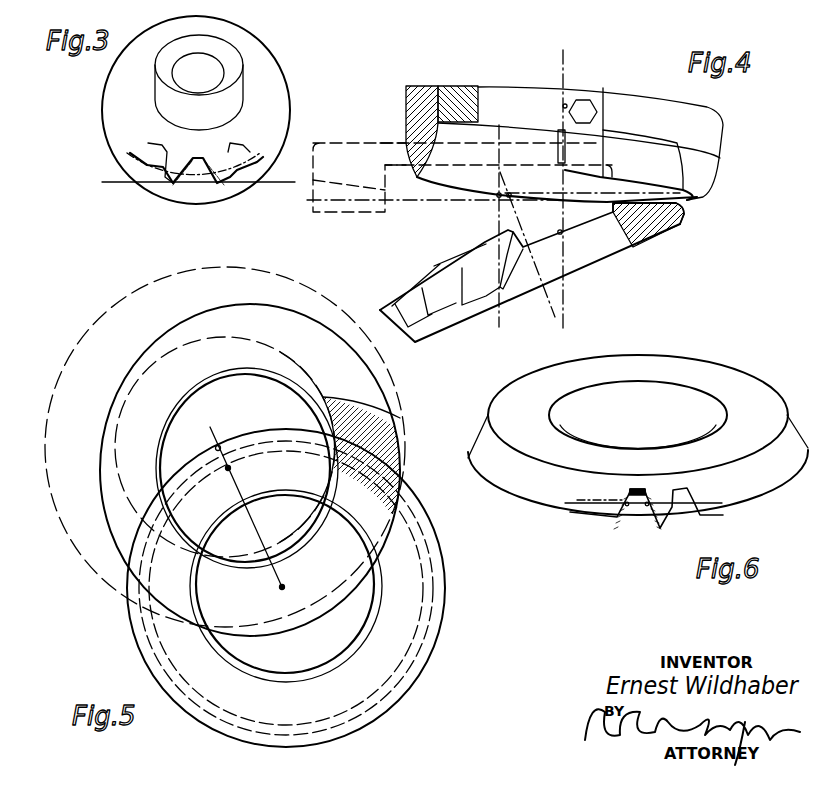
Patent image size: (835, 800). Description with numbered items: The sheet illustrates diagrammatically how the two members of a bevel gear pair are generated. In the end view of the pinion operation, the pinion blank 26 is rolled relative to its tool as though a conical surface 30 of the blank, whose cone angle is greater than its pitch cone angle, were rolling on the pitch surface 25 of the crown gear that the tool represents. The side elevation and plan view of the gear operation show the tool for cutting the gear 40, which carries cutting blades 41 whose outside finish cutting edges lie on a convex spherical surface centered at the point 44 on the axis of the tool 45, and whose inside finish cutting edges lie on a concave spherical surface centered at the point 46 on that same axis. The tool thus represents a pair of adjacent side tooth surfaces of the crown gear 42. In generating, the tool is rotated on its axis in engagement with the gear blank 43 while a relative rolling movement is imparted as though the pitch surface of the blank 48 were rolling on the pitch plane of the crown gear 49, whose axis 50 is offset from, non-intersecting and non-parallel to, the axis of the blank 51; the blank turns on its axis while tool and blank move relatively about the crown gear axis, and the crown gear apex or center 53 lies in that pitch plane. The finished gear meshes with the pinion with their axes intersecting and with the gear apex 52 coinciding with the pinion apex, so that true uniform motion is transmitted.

In FIG. 3, the pitch surface of the crown gear 25 is at (120, 183).
In FIG. 3, the pinion blank 26 is at (260, 52).
In FIG. 3, the conical surface of the blank 30 is at (257, 158).
In FIG. 4, the tool for cutting the gear 40 is at (712, 133).
In FIG. 5, the tool for cutting the gear 40 is at (447, 560).
In FIG. 4, the cutting blades 41 is at (590, 152).
In FIG. 4, the crown gear 42 is at (342, 152).
In FIG. 5, the crown gear 42 is at (113, 325).
In FIG. 4, the gear blank 43 is at (602, 257).
In FIG. 5, the gear blank 43 is at (285, 317).
In FIG. 6, the gear blank 43 is at (730, 375).
In FIG. 4, the center of the convex spherical surface 44 is at (563, 105).
In FIG. 4, the axis of the tool 45 is at (571, 63).
In FIG. 5, the axis of the tool 45 is at (255, 522).
In FIG. 4, the center of the concave spherical surface 46 is at (564, 228).
In FIG. 6, the pitch surface of the blank 48 is at (697, 500).
In FIG. 4, the pitch plane of the crown gear 49 is at (397, 202).
In FIG. 6, the pitch plane of the crown gear 49 is at (571, 505).
In FIG. 4, the axis of the crown gear 50 is at (497, 213).
In FIG. 4, the axis of the blank 51 is at (523, 225).
In FIG. 4, the apex of the gear 52 is at (512, 193).
In FIG. 5, the apex of the gear 52 is at (230, 470).
In FIG. 4, the crown gear apex or center 53 is at (496, 197).
In FIG. 5, the crown gear apex or center 53 is at (220, 445).